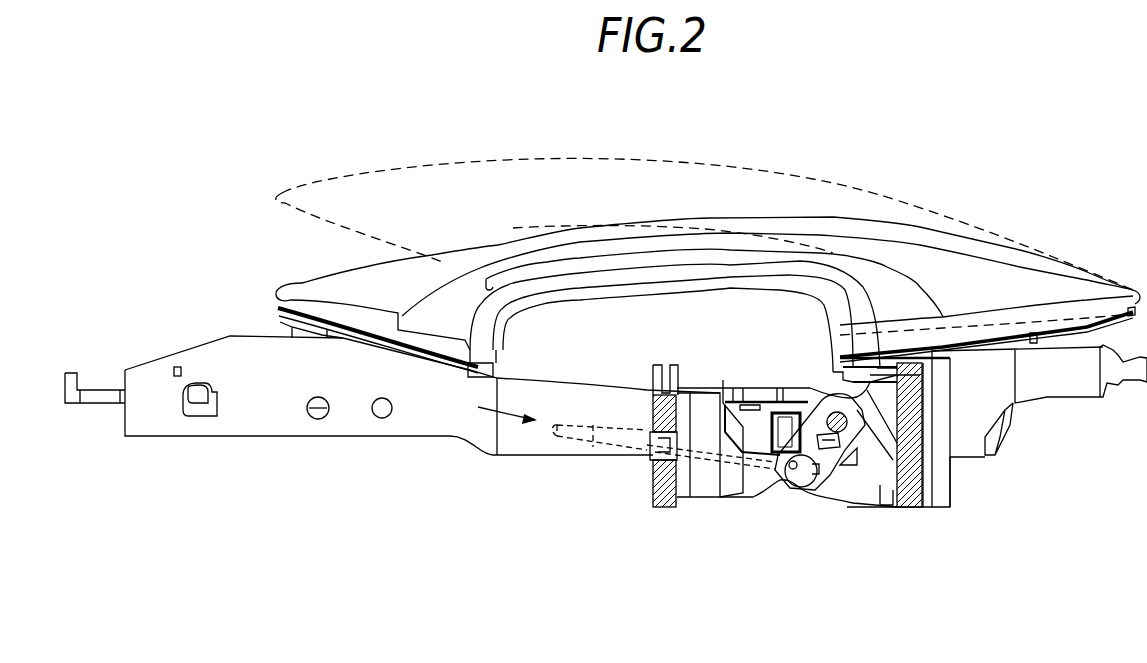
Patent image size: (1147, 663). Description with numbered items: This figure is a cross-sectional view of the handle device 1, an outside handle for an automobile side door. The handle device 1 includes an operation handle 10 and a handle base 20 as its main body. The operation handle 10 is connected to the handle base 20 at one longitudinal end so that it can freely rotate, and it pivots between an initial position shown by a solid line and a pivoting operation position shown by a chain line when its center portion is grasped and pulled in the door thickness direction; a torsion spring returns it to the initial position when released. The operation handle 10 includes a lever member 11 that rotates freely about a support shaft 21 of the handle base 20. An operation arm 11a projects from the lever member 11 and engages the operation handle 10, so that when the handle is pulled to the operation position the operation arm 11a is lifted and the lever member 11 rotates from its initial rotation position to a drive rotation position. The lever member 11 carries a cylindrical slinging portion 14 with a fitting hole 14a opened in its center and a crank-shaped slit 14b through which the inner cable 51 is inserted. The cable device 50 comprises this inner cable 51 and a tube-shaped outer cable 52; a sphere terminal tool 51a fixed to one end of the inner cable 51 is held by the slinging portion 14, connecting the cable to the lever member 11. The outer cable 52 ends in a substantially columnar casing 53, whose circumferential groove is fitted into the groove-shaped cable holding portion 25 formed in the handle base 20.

The handle device 1 is at (926, 165).
The operation handle 10 is at (718, 216).
The lever member 11 is at (840, 487).
The operation arm 11a is at (985, 453).
The slinging portion 14 is at (770, 487).
The fitting hole 14a is at (803, 493).
The slit 14b is at (782, 492).
The handle base 20 is at (415, 440).
The support shaft 21 is at (836, 315).
The cable holding portion 25 is at (647, 458).
The cable device 50 is at (618, 420).
The inner cable 51 is at (688, 470).
The sphere terminal tool 51a is at (793, 387).
The outer cable 52 is at (560, 437).
The casing 53 is at (690, 462).